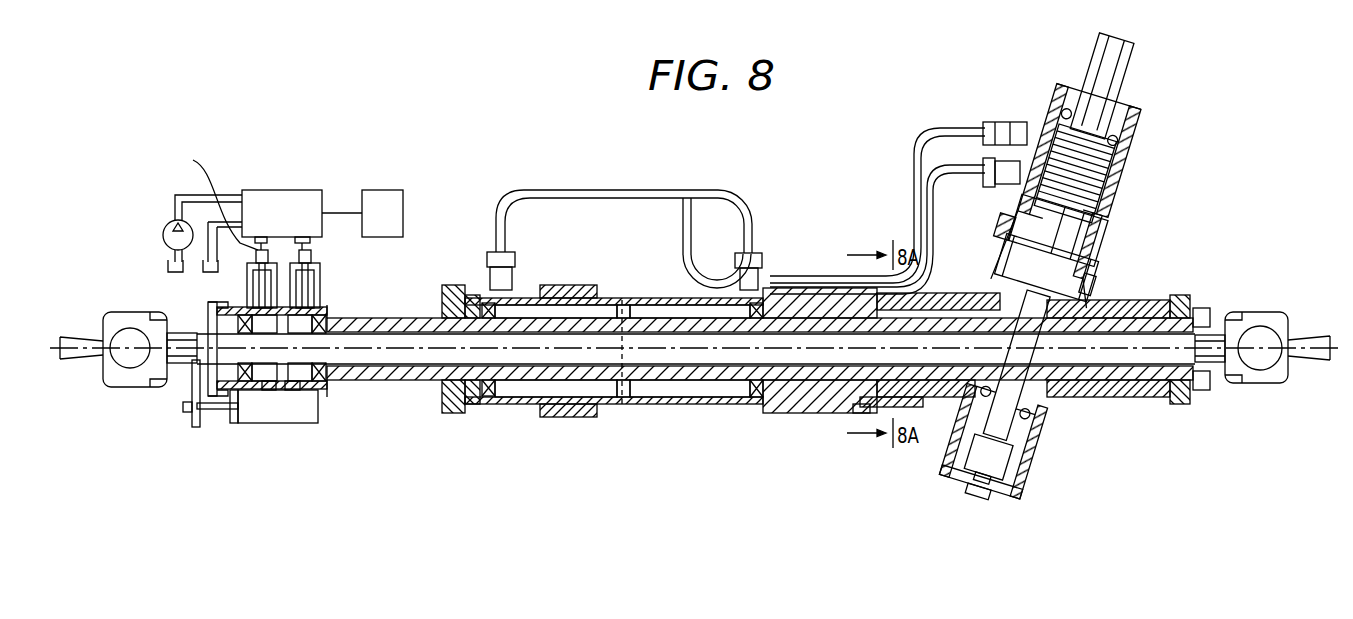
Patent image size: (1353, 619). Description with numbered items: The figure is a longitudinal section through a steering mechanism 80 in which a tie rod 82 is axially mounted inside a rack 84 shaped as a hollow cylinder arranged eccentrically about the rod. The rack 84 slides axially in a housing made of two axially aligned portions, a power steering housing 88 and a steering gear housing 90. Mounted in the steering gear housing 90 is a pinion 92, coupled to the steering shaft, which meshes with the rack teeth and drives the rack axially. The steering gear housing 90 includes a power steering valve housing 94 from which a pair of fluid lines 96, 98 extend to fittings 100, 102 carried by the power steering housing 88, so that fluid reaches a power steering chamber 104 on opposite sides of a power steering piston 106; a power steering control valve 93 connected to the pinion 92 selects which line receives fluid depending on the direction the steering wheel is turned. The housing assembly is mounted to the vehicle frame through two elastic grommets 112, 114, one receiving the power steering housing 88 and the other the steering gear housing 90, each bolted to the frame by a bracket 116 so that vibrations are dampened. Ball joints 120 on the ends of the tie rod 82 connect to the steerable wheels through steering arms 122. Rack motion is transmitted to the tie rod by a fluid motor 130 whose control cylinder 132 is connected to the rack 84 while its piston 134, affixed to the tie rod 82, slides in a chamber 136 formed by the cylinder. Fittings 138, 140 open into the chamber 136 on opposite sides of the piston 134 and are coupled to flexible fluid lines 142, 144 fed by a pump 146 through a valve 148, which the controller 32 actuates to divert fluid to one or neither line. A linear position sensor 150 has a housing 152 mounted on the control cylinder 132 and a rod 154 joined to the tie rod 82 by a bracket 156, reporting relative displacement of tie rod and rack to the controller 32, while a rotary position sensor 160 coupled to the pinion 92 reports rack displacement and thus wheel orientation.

The controller 32 is at (383, 190).
The mechanism 80 is at (703, 405).
The tie rod 82 is at (388, 358).
The rack 84 is at (1142, 397).
The power steering housing 88 is at (513, 404).
The steering gear housing 90 is at (812, 413).
The pinion 92 is at (1043, 393).
The power steering control valve 93 is at (1135, 193).
The power steering valve housing 94 is at (1143, 157).
The fluid line 96 is at (960, 128).
The fluid line 98 is at (958, 173).
The fitting 100 is at (518, 270).
The fitting 102 is at (762, 267).
The power steering chamber 104 is at (605, 390).
The power steering piston 106 is at (627, 385).
The elastic grommet 112 is at (603, 290).
The elastic grommet 114 is at (863, 413).
The bracket 116 is at (573, 287).
The ball joint 120 is at (118, 378).
The steering arm 122 is at (72, 353).
The fluid motor 130 is at (187, 308).
The control cylinder 132 is at (270, 387).
The piston 134 is at (293, 387).
The chamber 136 is at (302, 325).
The fitting 138 is at (242, 288).
The fitting 140 is at (320, 293).
The flexible fluid line 142 is at (210, 190).
The flexible fluid line 144 is at (310, 242).
The pump 146 is at (167, 227).
The valve 148 is at (286, 190).
The position sensor 150 is at (295, 427).
The housing 152 is at (250, 425).
The rod 154 is at (210, 410).
The bracket 156 is at (192, 383).
The rotary position sensor 160 is at (1003, 453).